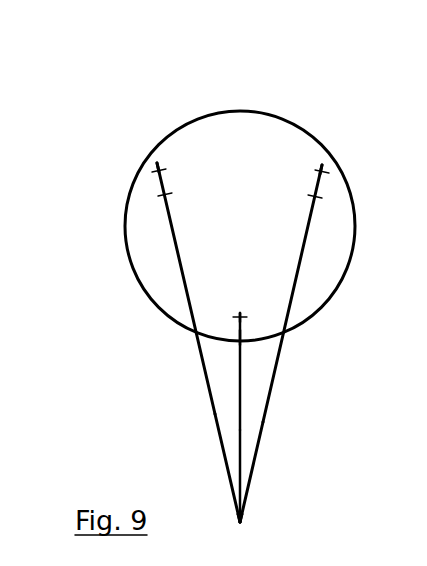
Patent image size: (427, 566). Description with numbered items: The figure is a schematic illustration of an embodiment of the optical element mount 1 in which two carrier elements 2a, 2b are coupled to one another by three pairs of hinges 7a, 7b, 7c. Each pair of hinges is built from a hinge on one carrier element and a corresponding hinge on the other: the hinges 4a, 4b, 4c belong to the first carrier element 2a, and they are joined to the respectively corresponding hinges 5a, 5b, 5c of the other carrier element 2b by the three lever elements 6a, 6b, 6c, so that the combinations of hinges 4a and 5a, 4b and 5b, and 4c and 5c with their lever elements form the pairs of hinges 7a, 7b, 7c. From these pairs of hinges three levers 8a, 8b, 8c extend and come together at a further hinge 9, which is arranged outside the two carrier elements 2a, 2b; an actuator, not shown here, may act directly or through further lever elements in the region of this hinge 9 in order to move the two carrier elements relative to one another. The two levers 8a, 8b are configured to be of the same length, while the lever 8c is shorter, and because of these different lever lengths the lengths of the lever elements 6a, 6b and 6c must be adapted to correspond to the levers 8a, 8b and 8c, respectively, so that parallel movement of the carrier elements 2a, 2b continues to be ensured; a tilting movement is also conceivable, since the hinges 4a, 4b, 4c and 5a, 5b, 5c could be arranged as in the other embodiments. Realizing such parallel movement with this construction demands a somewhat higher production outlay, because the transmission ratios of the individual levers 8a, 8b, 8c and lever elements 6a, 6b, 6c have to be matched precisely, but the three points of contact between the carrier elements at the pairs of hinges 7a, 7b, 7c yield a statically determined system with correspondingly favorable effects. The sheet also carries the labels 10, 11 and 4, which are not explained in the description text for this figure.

The optical element mount 1 is at (155, 106).
The carrier element 2a is at (240, 192).
The carrier element 2b is at (282, 125).
The hinge 4a is at (178, 290).
The hinge 4b is at (304, 291).
The hinge 4c is at (270, 417).
The hinge 5a is at (166, 194).
The hinge 5b is at (317, 198).
The hinge 5c is at (238, 336).
The lever element 6a is at (163, 170).
The lever element 6b is at (318, 186).
The lever element 6c is at (238, 326).
The pair of hinges 7a is at (142, 174).
The pair of hinges 7b is at (307, 164).
The pair of hinges 7c is at (255, 325).
The lever 8a is at (215, 420).
The lever 8b is at (263, 443).
The lever 8c is at (241, 425).
The hinge 9 is at (243, 524).
The element 10 is at (271, 5).
The element 11 is at (346, 5).
The element 4 is at (421, 528).